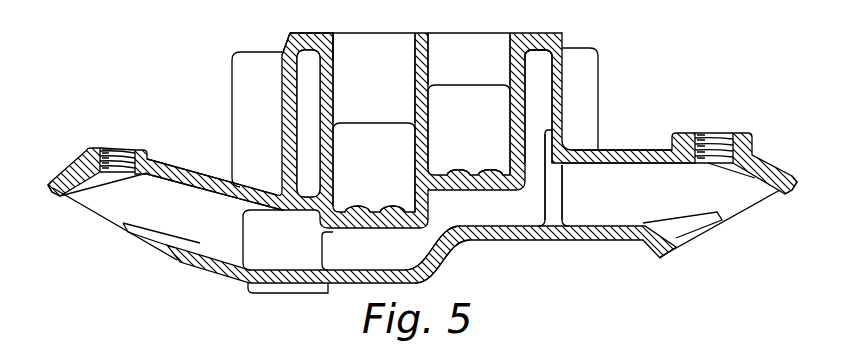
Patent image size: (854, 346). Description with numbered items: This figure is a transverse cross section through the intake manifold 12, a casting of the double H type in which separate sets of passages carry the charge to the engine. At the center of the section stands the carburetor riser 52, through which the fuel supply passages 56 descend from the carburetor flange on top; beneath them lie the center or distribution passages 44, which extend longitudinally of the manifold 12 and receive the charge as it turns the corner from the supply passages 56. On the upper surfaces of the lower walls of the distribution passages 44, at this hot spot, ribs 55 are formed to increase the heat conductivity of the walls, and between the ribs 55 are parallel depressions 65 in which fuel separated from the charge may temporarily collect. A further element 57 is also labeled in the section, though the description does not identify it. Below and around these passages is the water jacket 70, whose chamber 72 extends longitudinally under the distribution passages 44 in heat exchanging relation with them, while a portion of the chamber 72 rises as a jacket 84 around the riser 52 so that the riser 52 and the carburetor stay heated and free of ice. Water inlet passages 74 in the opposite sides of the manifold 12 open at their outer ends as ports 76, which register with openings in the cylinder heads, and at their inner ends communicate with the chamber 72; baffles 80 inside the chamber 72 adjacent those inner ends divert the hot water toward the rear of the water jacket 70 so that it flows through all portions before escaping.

The intake manifold 12 is at (354, 30).
The distribution passage 44 is at (342, 162).
The carburetor riser 52 is at (308, 57).
The ribs 55 is at (384, 205).
The fuel supply passages 56 is at (415, 66).
The slot 57 is at (538, 60).
The depressions 65 is at (366, 204).
The water jacket 70 is at (517, 226).
The chamber 72 is at (451, 228).
The water inlet passages 74 is at (184, 192).
The ports 76 is at (82, 205).
The baffles 80 is at (330, 256).
The jacket 84 is at (300, 95).